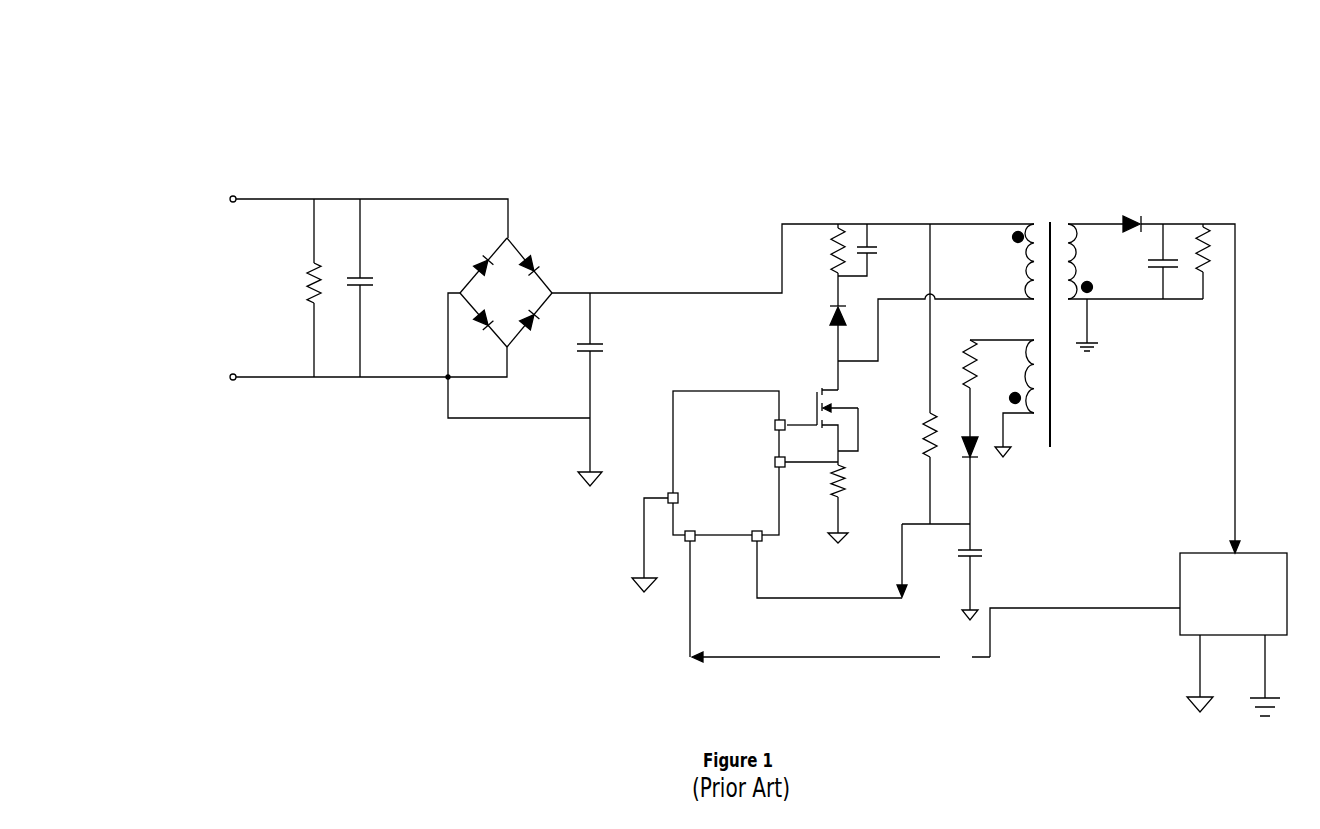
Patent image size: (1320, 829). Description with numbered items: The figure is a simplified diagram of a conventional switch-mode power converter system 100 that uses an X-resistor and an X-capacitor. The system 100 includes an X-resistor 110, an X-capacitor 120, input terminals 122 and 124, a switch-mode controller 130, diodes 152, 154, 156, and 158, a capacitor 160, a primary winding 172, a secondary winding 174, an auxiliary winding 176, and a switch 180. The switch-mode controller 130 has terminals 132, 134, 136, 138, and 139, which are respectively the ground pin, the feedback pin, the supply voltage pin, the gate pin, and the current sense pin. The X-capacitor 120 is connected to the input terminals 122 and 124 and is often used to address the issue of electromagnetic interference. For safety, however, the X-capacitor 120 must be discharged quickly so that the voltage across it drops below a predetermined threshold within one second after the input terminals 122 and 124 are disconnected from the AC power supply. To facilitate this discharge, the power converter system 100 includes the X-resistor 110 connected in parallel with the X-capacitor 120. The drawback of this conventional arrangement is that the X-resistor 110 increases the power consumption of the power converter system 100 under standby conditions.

The switch-mode power converter system 100 is at (282, 118).
The X-resistor 110 is at (316, 302).
The X-capacitor 120 is at (366, 288).
The input terminal 122 is at (233, 196).
The input terminal 124 is at (233, 380).
The switch-mode controller 130 is at (757, 390).
The terminal 132 is at (671, 506).
The terminal 134 is at (688, 543).
The terminal 136 is at (755, 543).
The terminal 138 is at (786, 419).
The terminal 139 is at (784, 468).
The diode 152 is at (484, 252).
The diode 154 is at (529, 252).
The diode 156 is at (488, 334).
The diode 158 is at (525, 334).
The capacitor 160 is at (975, 556).
The primary winding 172 is at (1031, 222).
The secondary winding 174 is at (1068, 227).
The auxiliary winding 176 is at (1033, 418).
The switch 180 is at (839, 392).